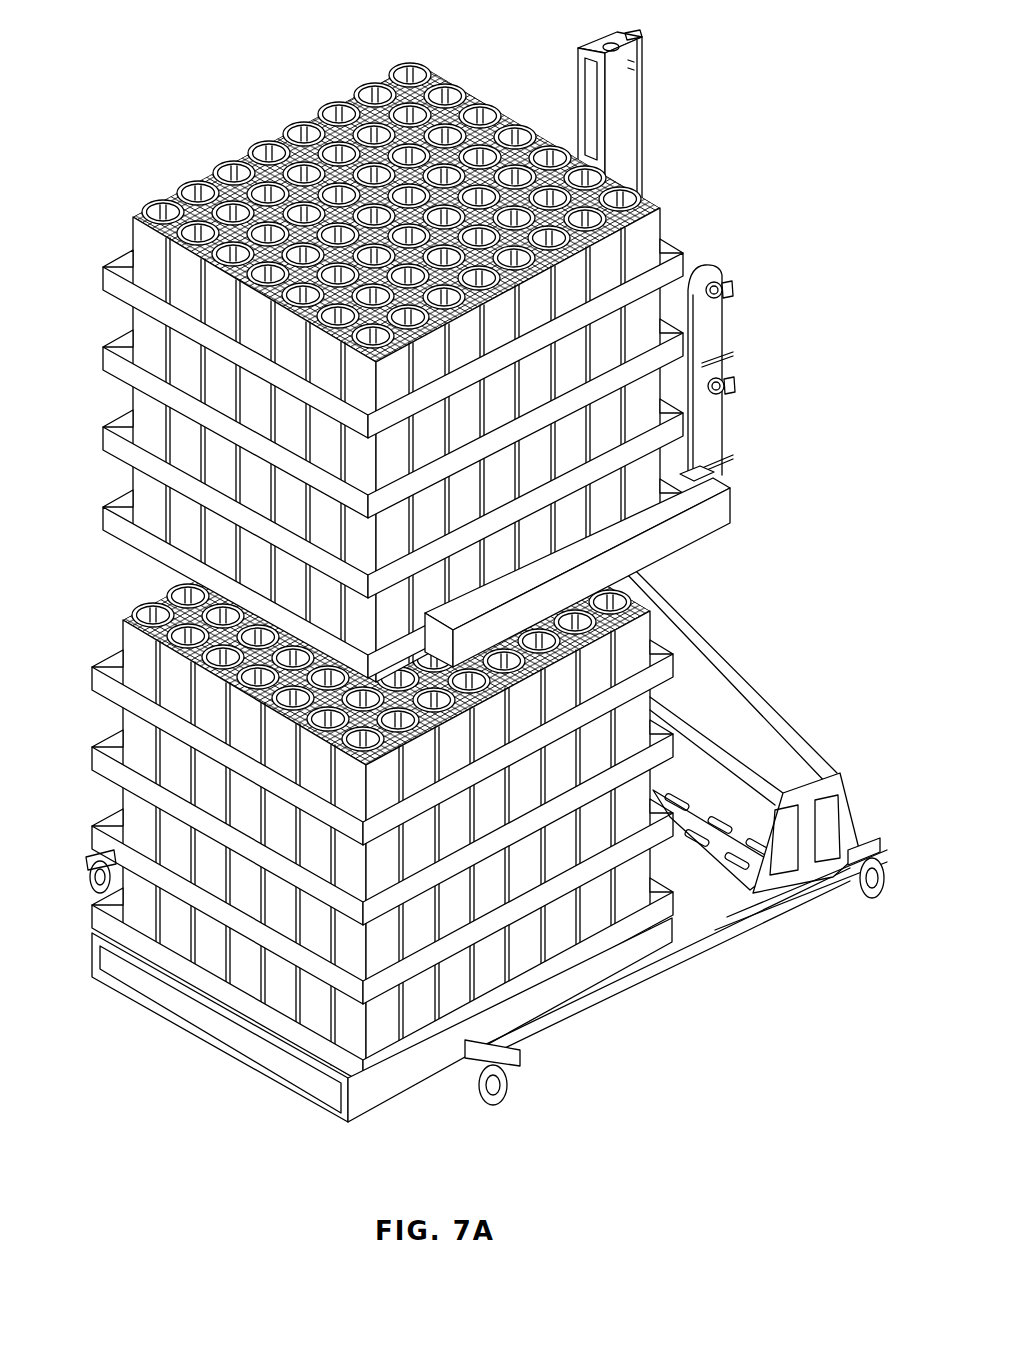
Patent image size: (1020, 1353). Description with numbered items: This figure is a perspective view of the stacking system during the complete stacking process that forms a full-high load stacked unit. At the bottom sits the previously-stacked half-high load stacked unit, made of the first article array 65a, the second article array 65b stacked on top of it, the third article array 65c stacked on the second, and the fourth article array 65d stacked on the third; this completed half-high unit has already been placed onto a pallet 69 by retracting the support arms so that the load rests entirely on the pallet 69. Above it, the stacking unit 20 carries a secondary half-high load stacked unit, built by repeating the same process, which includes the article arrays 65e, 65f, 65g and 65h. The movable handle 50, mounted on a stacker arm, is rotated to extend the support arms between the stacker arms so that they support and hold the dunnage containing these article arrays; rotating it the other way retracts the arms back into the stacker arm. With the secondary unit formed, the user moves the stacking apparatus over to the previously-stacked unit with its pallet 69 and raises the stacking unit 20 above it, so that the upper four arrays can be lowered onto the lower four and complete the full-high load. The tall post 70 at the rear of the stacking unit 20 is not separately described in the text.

The stacking unit 20 is at (688, 563).
The movable handle 50 is at (706, 424).
The first article array 65a is at (82, 887).
The second article array 65b is at (88, 797).
The third article array 65c is at (93, 716).
The fourth article array 65d is at (98, 636).
The article array 65e is at (94, 490).
The article array 65f is at (98, 406).
The article array 65g is at (103, 318).
The article array 65h is at (127, 208).
The pallet 69 is at (162, 1022).
The mast 70 is at (644, 98).